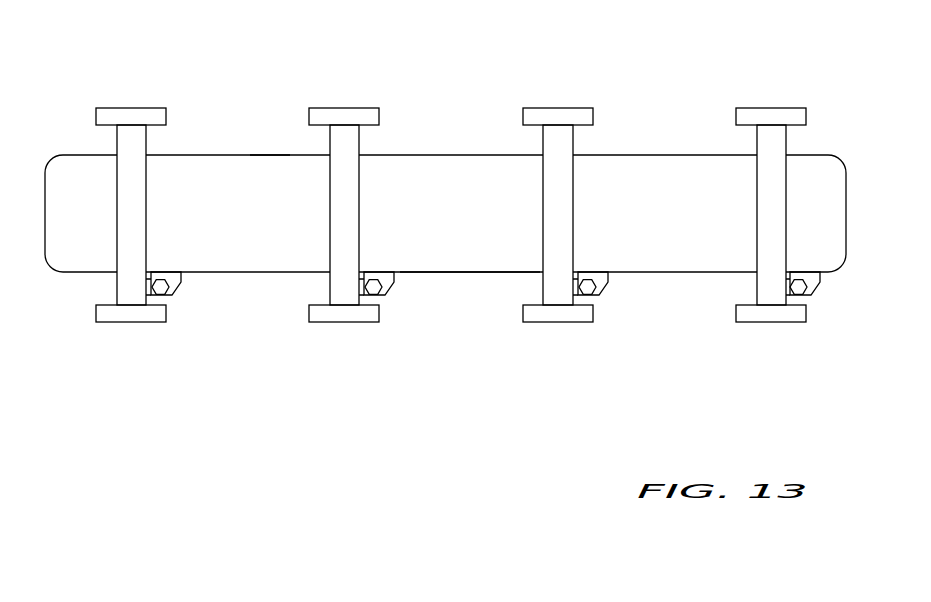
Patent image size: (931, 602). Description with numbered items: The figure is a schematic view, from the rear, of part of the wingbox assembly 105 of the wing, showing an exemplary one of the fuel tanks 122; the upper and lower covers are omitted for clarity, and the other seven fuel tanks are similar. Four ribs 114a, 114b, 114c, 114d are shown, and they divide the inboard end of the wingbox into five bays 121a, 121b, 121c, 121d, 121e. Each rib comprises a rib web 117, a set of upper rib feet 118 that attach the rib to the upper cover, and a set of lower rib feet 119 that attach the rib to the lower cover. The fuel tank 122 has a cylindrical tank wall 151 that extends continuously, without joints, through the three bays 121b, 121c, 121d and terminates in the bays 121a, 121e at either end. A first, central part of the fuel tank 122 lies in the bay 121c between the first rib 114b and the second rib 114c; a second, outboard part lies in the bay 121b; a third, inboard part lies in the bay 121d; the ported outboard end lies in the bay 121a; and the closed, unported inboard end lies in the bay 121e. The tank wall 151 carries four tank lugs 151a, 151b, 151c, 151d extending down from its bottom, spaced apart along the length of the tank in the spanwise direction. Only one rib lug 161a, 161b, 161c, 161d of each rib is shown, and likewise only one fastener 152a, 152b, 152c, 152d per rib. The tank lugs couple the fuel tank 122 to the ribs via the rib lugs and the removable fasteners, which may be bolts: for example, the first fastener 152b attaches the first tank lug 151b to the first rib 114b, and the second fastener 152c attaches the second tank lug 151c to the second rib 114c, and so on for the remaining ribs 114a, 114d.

The wingbox assembly 105 is at (112, 402).
The rib 114a is at (127, 90).
The rib 114b is at (365, 202).
The rib 114c is at (529, 168).
The rib 114d is at (770, 98).
The rib web 117 is at (560, 190).
The upper rib feet 118 is at (360, 118).
The lower rib feet 119 is at (350, 308).
The bay 121a is at (95, 148).
The bay 121b is at (247, 148).
The bay 121c is at (487, 148).
The bay 121d is at (707, 148).
The bay 121e is at (865, 148).
The fuel tank 122 is at (270, 163).
The tank wall 151 is at (462, 272).
The tank lug 151a is at (175, 285).
The tank lug 151b is at (378, 277).
The tank lug 151c is at (595, 277).
The tank lug 151d is at (815, 282).
The fastener 152a is at (163, 283).
The fastener 152b is at (377, 290).
The fastener 152c is at (593, 292).
The fastener 152d is at (797, 285).
The rib lug 161a is at (157, 297).
The rib lug 161b is at (362, 290).
The rib lug 161c is at (587, 297).
The rib lug 161d is at (797, 298).